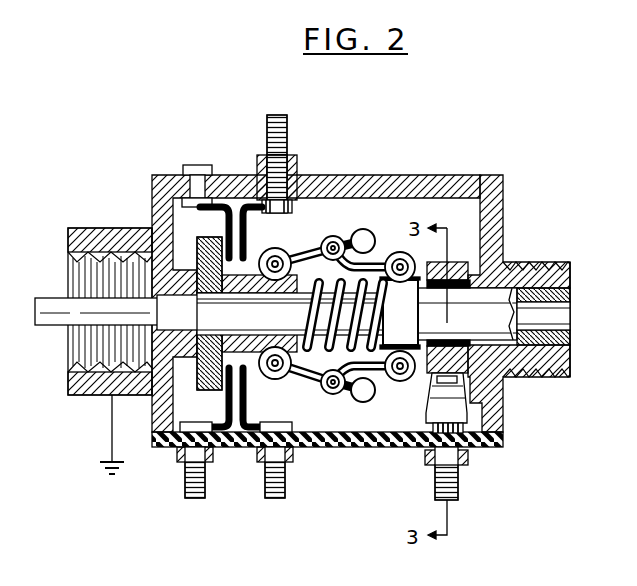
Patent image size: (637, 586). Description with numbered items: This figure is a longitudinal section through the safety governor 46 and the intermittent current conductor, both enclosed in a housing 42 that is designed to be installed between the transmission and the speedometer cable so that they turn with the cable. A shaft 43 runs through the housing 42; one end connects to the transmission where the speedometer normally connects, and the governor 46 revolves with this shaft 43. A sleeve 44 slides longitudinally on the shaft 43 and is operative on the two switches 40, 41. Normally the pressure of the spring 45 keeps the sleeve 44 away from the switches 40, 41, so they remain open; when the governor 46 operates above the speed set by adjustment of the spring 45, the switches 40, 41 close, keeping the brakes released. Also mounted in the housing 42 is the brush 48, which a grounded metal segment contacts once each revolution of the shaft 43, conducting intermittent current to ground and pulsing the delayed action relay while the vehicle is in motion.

The switch 40 is at (248, 395).
The switch 41 is at (248, 229).
The housing 42 is at (392, 175).
The shaft 43 is at (572, 300).
The sleeve 44 is at (197, 246).
The spring 45 is at (322, 288).
The safety governor 46 is at (349, 396).
The brush 48 is at (470, 404).